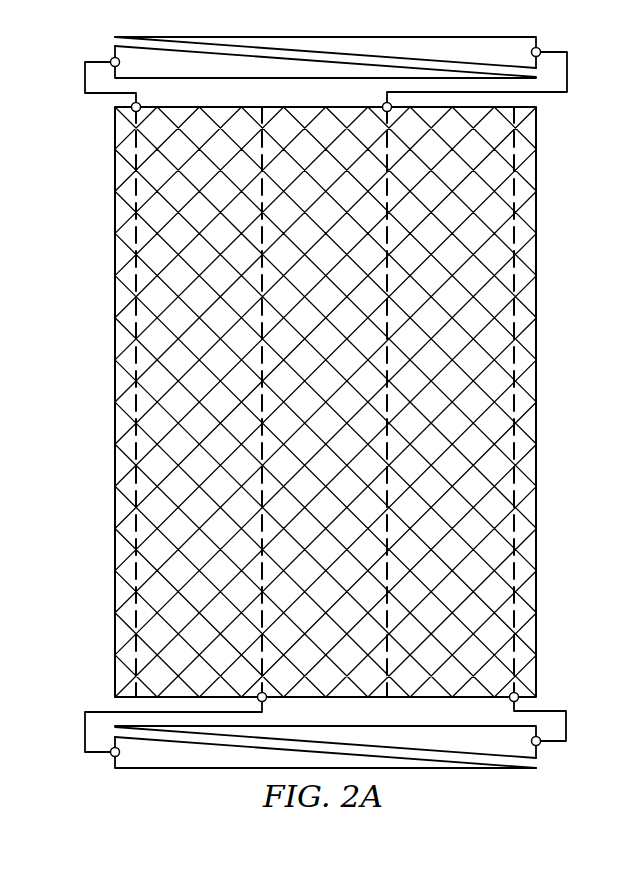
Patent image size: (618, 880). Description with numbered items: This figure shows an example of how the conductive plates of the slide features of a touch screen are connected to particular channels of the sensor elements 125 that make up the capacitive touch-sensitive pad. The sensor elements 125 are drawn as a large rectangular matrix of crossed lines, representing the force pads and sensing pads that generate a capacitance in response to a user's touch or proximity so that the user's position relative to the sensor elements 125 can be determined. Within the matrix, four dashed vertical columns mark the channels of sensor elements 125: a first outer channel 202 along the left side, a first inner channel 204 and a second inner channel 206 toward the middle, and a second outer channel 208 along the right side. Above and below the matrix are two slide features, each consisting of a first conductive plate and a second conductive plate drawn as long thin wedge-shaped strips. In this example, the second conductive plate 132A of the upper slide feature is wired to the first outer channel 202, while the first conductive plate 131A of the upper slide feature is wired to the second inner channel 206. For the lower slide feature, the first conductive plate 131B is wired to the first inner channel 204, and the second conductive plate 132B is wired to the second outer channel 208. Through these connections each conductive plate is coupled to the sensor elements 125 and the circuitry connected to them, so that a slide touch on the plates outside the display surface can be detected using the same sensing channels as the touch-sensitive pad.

The sensor elements 125 is at (121, 465).
The first conductive plate 131A is at (539, 37).
The first conductive plate 131B is at (113, 762).
The second conductive plate 132A is at (114, 50).
The second conductive plate 132B is at (536, 753).
The first outer channel 202 is at (134, 147).
The first inner channel 204 is at (262, 140).
The second inner channel 206 is at (387, 145).
The second outer channel 208 is at (515, 146).